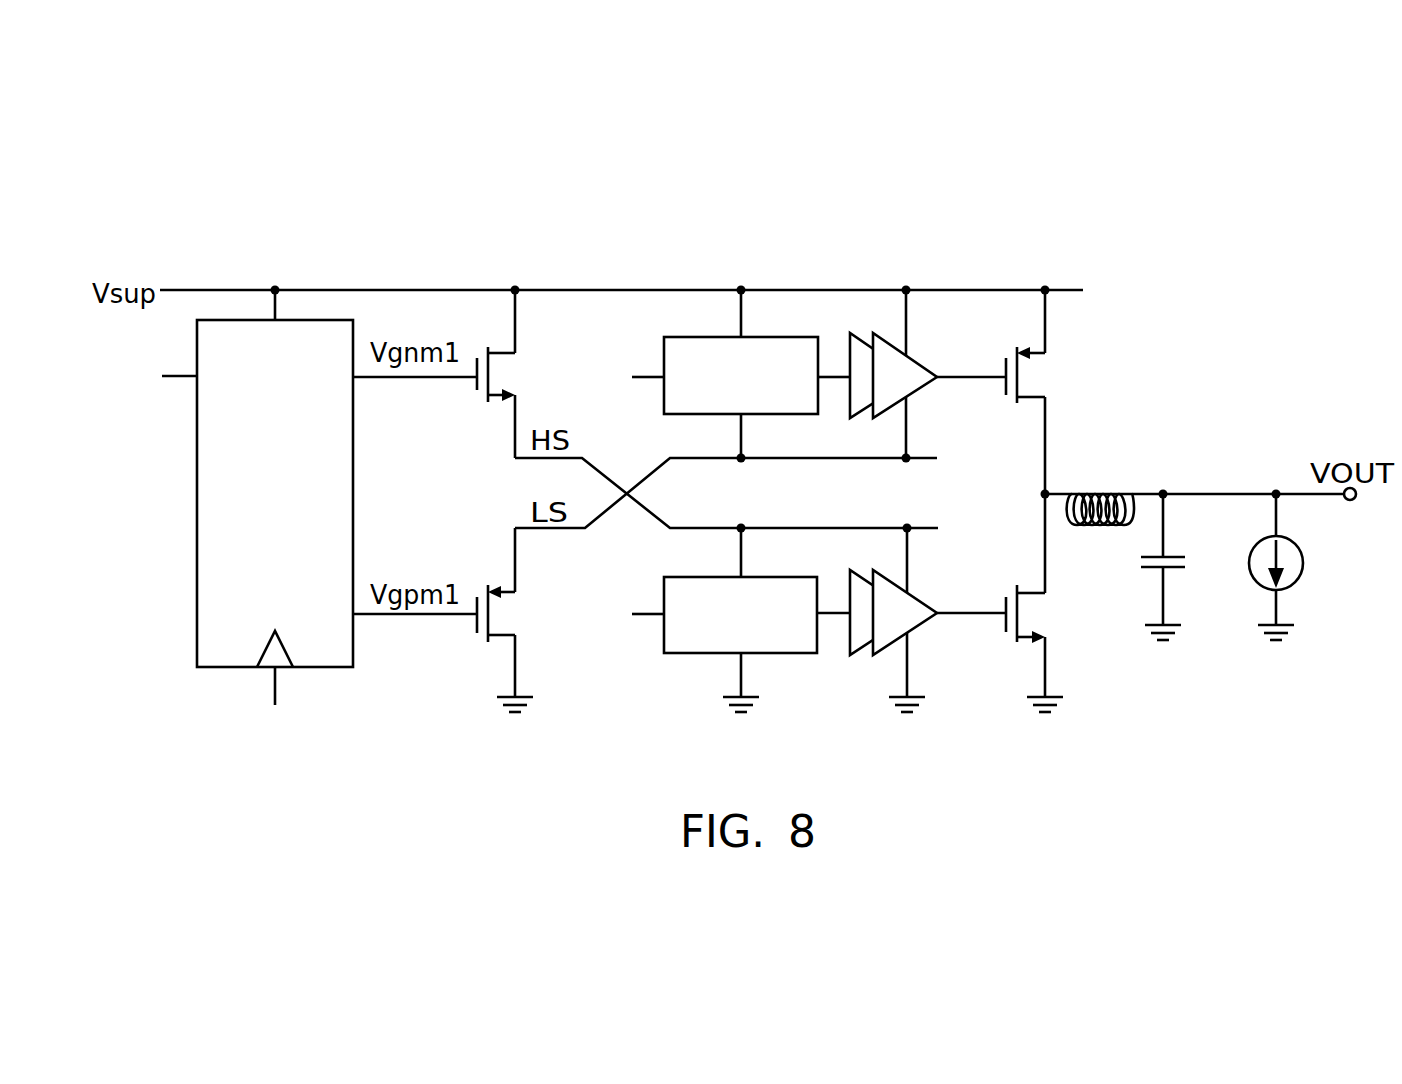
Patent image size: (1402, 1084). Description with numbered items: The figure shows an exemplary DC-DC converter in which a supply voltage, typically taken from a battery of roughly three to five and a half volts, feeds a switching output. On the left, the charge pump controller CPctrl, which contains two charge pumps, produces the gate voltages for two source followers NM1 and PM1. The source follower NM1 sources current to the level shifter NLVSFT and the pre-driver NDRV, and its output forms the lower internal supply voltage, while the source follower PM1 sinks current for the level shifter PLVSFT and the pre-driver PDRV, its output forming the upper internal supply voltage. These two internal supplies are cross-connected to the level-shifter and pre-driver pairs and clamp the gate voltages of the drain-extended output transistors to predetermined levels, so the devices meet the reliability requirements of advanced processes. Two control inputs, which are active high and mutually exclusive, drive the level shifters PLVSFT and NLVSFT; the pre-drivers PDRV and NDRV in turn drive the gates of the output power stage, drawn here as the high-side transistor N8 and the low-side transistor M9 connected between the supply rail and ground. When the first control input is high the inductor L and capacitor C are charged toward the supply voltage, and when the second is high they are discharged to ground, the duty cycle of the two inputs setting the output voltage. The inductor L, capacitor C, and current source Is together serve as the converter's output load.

The charge pump controller CPctrl is at (224, 515).
The source follower NM1 is at (492, 402).
The source follower PM1 is at (508, 590).
The level shifter PLVSFT is at (704, 374).
The pre-driver PDRV is at (912, 374).
The high-side power transistor N8 is at (1030, 402).
The level shifter NLVSFT is at (703, 620).
The pre-driver NDRV is at (911, 620).
The low-side power transistor M9 is at (1030, 593).
The inductor L is at (1105, 494).
The capacitor C is at (1190, 562).
The current source Is is at (1303, 562).